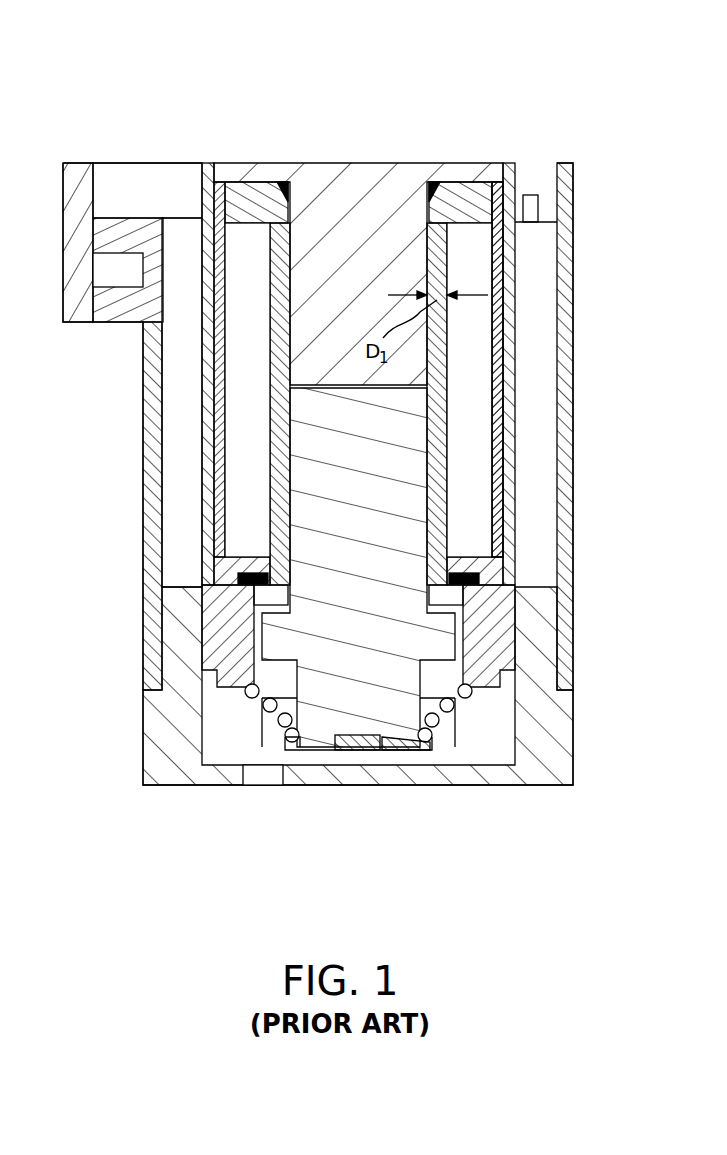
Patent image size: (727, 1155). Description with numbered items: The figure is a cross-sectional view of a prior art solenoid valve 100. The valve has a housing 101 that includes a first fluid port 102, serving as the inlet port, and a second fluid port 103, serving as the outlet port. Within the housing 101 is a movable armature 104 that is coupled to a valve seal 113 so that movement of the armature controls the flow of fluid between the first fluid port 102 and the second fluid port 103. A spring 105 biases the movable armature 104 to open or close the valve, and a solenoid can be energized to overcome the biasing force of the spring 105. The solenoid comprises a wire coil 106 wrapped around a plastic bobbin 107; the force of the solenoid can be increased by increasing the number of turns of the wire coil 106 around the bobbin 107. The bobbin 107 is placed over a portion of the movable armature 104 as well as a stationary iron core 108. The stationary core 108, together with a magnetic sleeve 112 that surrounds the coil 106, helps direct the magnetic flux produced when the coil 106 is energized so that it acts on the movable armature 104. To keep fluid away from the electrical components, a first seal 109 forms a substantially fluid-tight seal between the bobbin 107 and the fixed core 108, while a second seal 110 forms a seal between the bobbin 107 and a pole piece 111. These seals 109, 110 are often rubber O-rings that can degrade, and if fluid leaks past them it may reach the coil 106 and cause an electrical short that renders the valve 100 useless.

The solenoid valve 100 is at (466, 126).
The housing 101 is at (150, 440).
The first fluid port 102 is at (262, 787).
The second fluid port 103 is at (348, 762).
The movable armature 104 is at (390, 752).
The spring 105 is at (450, 708).
The wire coil 106 is at (480, 380).
The plastic bobbin 107 is at (228, 205).
The stationary iron core 108 is at (305, 316).
The first seal 109 is at (435, 185).
The second seal 110 is at (477, 580).
The pole piece 111 is at (222, 633).
The magnetic sleeve 112 is at (493, 480).
The valve seal 113 is at (340, 745).